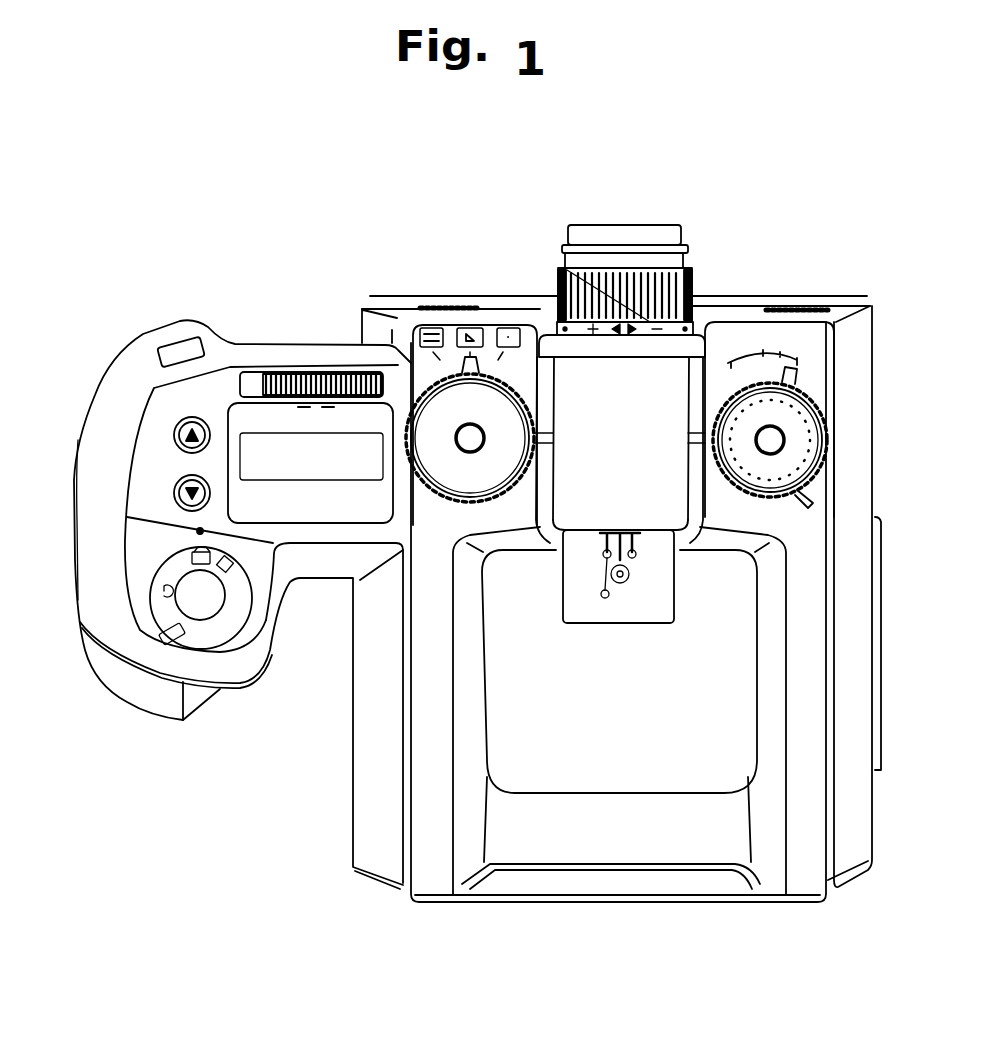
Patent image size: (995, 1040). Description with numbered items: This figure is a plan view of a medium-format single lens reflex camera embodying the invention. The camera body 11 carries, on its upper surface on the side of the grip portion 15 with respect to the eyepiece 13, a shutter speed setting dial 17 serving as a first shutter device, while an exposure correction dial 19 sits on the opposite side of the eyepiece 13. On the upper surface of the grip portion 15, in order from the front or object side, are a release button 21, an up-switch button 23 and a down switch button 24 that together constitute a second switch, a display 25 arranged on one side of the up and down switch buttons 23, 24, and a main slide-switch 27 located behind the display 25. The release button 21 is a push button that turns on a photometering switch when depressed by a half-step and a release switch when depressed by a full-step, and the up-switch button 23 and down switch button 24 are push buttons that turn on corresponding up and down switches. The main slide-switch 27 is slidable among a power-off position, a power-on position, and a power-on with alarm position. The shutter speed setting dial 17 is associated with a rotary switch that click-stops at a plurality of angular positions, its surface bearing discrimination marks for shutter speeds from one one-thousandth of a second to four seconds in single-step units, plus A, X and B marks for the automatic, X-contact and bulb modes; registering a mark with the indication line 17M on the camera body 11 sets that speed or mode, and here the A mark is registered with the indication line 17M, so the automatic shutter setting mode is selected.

The camera body 11 is at (340, 306).
The eyepiece 13 is at (625, 225).
The grip portion 15 is at (142, 690).
The shutter speed setting dial 17 is at (482, 384).
The indication line 17M is at (518, 440).
The exposure correction dial 19 is at (820, 404).
The release button 21 is at (203, 597).
The up-switch button 23 is at (178, 488).
The down switch button 24 is at (187, 430).
The display 25 is at (233, 420).
The main slide-switch 27 is at (293, 373).